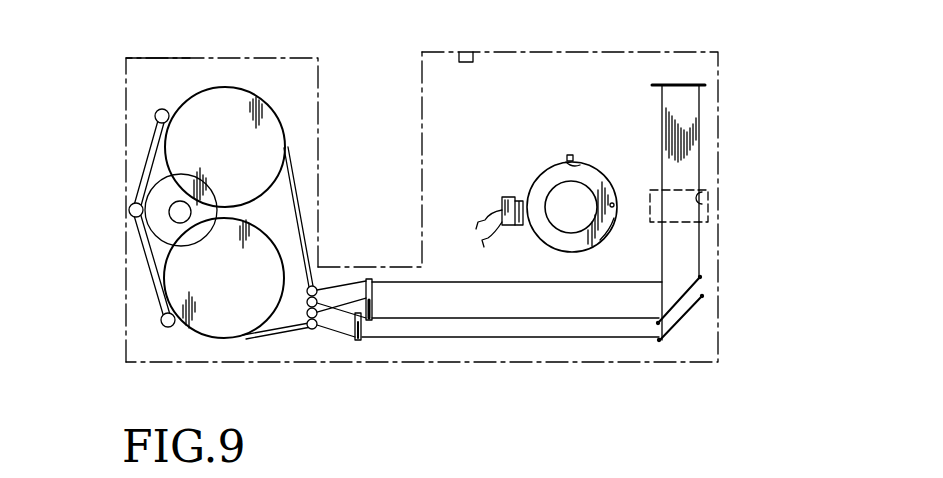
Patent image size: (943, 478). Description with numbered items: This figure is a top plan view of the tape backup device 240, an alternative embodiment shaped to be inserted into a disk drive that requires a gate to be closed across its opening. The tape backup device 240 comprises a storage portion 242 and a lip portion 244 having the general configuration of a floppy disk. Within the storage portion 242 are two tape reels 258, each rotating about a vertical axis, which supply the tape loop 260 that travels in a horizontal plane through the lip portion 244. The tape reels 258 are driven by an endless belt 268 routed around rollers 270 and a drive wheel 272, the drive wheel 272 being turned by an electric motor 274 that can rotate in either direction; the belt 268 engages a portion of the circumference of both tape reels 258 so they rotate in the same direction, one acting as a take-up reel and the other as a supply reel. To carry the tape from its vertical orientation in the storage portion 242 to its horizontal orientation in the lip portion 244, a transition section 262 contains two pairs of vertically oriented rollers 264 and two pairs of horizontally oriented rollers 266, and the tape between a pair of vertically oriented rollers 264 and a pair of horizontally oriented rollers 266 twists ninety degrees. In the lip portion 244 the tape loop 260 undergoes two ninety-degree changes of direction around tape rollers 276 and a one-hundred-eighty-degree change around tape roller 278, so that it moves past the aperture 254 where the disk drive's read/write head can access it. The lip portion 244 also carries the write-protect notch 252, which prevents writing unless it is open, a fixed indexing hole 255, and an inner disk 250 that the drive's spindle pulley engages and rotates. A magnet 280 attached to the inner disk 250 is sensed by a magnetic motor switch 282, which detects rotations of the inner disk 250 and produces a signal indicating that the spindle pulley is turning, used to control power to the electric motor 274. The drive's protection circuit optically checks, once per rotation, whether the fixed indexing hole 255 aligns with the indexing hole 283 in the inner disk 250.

The tape backup device 240 is at (397, 47).
The storage portion 242 is at (148, 57).
The lip portion 244 is at (660, 363).
The inner disk 250 is at (542, 172).
The write-protect notch 252 is at (466, 52).
The aperture 254 is at (704, 197).
The fixed indexing hole 255 is at (579, 163).
The tape reels 258 is at (257, 100).
The tape loop 260 is at (700, 255).
The transition section 262 is at (413, 258).
The vertically oriented rollers 264 is at (309, 329).
The horizontally oriented rollers 266 is at (370, 322).
The endless belt 268 is at (137, 177).
The rollers 270 is at (157, 112).
The drive wheel 272 is at (177, 222).
The electric motor 274 is at (153, 237).
The tape rollers 276 is at (703, 296).
The tape roller 278 is at (700, 84).
The magnet 280 is at (570, 155).
The magnetic motor switch 282 is at (504, 198).
The indexing hole 283 is at (612, 224).